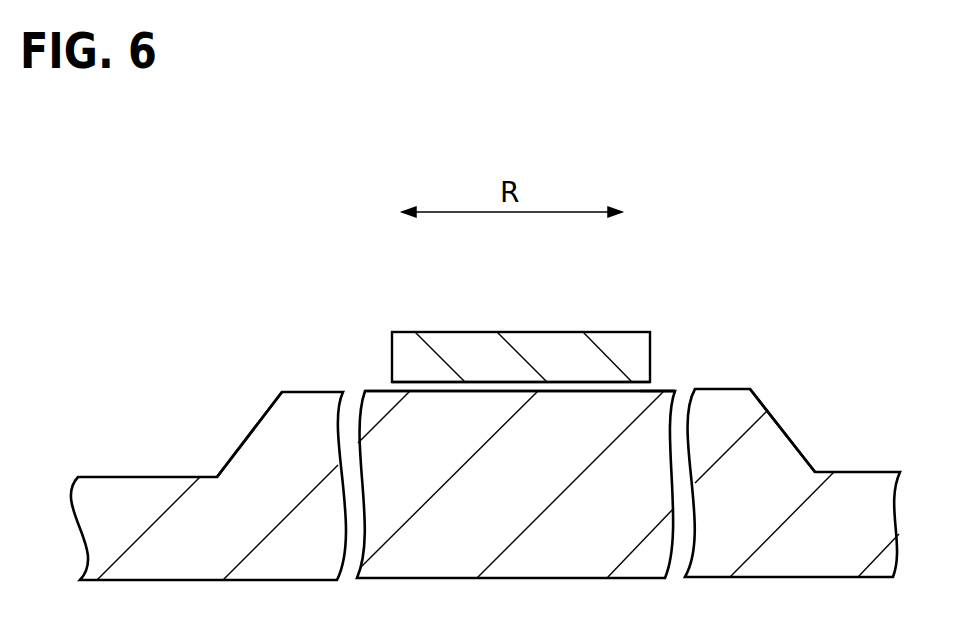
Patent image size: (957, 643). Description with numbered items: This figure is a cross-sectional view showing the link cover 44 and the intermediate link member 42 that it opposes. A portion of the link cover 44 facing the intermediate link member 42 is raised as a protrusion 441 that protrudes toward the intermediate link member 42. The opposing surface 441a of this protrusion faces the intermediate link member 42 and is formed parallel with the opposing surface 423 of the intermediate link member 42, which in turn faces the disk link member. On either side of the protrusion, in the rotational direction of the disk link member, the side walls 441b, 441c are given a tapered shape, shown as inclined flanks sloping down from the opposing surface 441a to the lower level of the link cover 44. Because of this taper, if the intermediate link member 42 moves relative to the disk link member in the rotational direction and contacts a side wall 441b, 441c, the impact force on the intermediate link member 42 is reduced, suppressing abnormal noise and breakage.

The intermediate link member 42 is at (577, 332).
The opposing surface 423 is at (491, 386).
The link cover 44 is at (857, 472).
The projecting portion of substrate 441 is at (723, 388).
The opposing surface 441a is at (663, 391).
The side wall 441b is at (787, 433).
The side wall 441c is at (242, 438).